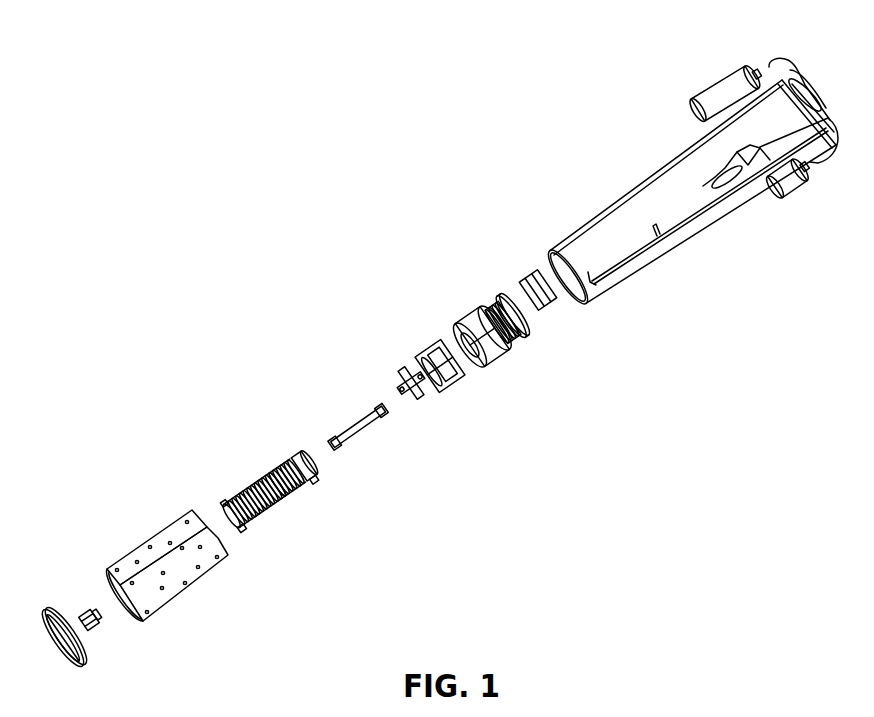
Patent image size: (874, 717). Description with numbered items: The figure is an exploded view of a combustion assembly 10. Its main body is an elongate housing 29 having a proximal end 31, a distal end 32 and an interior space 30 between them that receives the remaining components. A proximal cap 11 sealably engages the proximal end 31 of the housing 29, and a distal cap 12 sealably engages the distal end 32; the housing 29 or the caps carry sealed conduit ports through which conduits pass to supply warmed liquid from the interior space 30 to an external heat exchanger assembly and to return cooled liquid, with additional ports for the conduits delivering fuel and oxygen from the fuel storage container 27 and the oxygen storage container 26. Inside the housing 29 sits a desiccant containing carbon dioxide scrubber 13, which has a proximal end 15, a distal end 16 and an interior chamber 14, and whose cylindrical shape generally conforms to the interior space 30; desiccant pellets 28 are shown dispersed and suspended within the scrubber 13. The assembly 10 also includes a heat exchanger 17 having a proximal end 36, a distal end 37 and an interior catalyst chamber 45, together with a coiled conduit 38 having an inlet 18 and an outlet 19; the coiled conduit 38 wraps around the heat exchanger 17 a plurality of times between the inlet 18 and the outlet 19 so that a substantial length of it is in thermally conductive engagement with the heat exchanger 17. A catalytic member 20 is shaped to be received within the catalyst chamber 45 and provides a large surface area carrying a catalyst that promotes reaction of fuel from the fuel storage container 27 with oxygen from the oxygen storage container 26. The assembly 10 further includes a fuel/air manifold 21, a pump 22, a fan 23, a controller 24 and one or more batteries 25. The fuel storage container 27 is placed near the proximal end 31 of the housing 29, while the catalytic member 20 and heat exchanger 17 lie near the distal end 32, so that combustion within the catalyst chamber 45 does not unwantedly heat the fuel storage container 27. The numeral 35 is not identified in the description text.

The combustion assembly 10 is at (359, 201).
The proximal cap 11 is at (787, 57).
The distal cap 12 is at (80, 660).
The desiccant containing carbon dioxide scrubber 13 is at (152, 586).
The interior chamber 14 is at (135, 543).
The proximal end 15 is at (223, 555).
The distal end 16 is at (148, 622).
The heat exchanger 17 is at (277, 500).
The inlet 18 is at (312, 478).
The outlet 19 is at (243, 532).
The catalytic member 20 is at (355, 420).
The fuel/air manifold 21 is at (398, 372).
The pump 22 is at (435, 348).
The fan 23 is at (462, 323).
The controller 24 is at (503, 303).
The batteries 25 is at (535, 278).
The oxygen storage container 26 is at (797, 200).
The fuel storage container 27 is at (704, 97).
The desiccant pellets 28 is at (112, 568).
The elongate housing 29 is at (643, 177).
The interior space 30 is at (641, 263).
The proximal end 31 is at (836, 122).
The distal end 32 is at (590, 213).
The fastener 35 is at (95, 632).
The proximal end 36 is at (300, 462).
The distal end 37 is at (228, 508).
The coiled conduit 38 is at (265, 473).
The interior catalyst chamber 45 is at (218, 520).